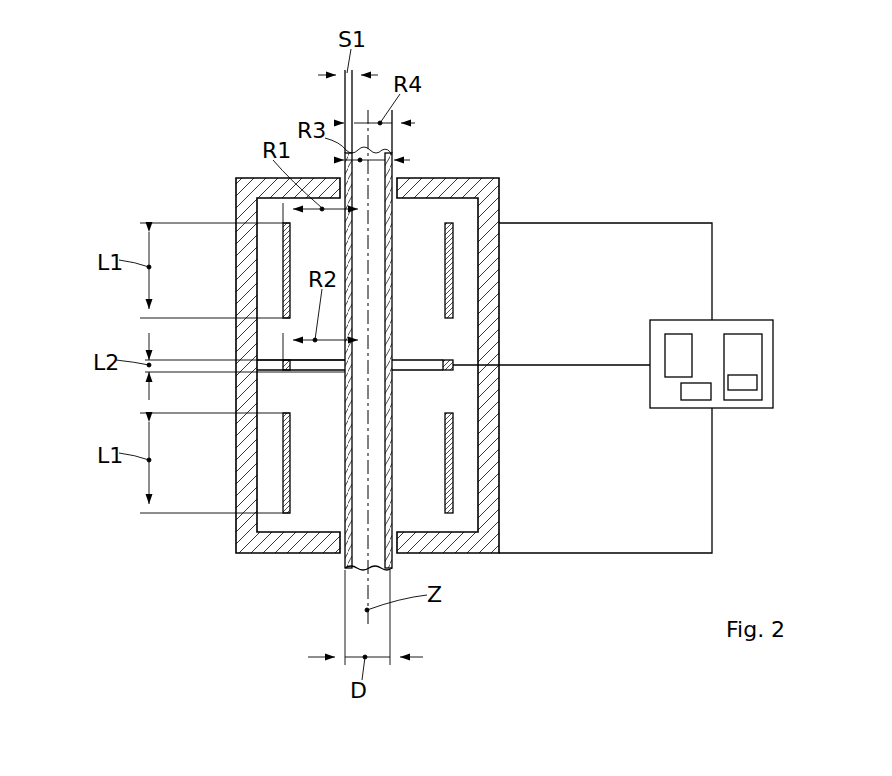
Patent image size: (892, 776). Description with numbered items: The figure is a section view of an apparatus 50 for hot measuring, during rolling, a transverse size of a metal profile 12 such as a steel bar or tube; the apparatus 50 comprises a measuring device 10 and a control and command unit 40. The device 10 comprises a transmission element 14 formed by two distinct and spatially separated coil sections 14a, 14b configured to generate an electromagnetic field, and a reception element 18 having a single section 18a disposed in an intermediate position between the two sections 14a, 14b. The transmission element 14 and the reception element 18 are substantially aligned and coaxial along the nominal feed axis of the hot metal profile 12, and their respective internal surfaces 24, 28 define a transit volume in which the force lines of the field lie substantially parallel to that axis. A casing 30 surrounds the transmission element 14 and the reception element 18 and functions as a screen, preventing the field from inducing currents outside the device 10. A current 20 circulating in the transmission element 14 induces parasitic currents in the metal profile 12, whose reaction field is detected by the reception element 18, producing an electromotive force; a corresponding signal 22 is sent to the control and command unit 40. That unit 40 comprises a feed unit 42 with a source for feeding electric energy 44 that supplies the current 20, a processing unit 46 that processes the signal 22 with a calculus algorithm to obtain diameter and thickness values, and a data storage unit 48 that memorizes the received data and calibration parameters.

The measuring device 10 is at (468, 165).
The metal profile 12 is at (347, 559).
The transmission element 14 is at (275, 315).
The first section of transmission element 14a is at (287, 265).
The second section of transmission element 14b is at (287, 468).
The reception element 18 is at (283, 367).
The section of reception element 18a is at (450, 368).
The current 20 is at (682, 222).
The signal 22 is at (577, 358).
The internal surface of transmission element 24 is at (445, 257).
The internal surface of reception element 28 is at (437, 360).
The casing 30 is at (487, 542).
The control and command unit 40 is at (752, 307).
The feed unit 42 is at (746, 355).
The source for feeding electric energy 44 is at (742, 383).
The processing unit 46 is at (680, 347).
The data storage unit 48 is at (697, 390).
The apparatus for hot measuring 50 is at (202, 173).